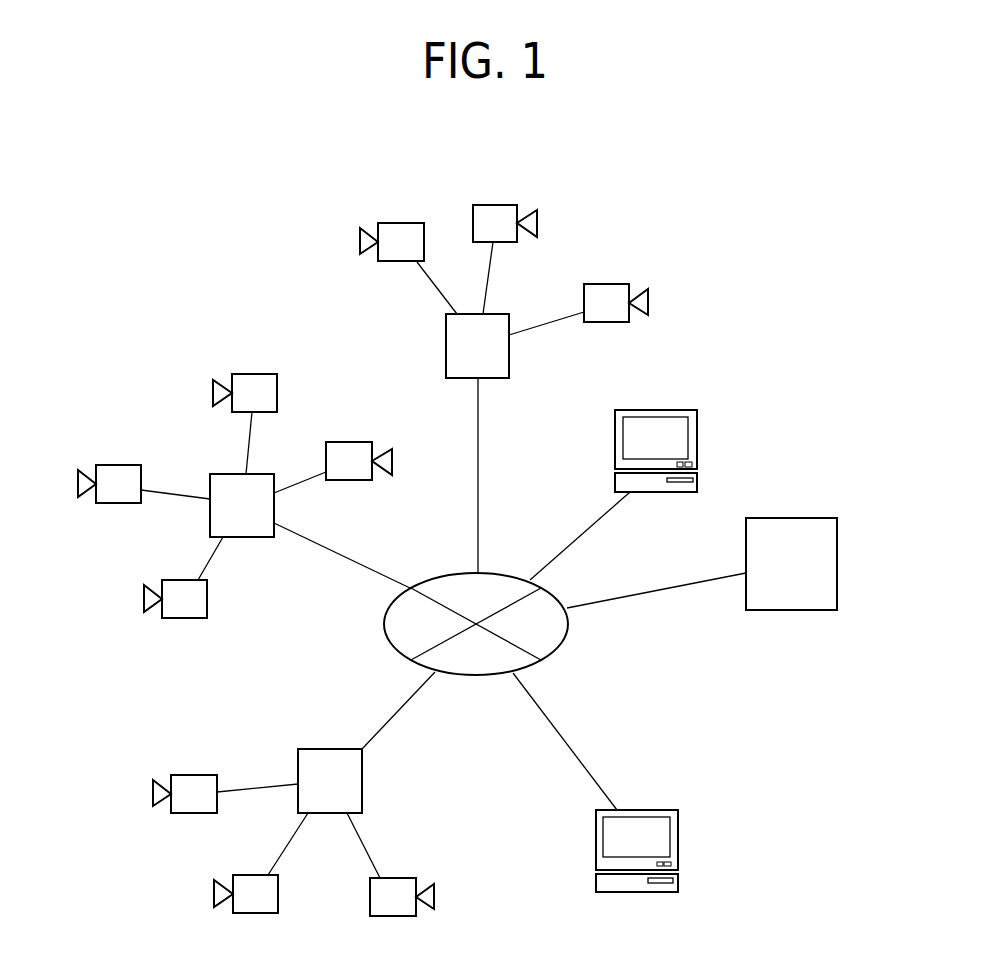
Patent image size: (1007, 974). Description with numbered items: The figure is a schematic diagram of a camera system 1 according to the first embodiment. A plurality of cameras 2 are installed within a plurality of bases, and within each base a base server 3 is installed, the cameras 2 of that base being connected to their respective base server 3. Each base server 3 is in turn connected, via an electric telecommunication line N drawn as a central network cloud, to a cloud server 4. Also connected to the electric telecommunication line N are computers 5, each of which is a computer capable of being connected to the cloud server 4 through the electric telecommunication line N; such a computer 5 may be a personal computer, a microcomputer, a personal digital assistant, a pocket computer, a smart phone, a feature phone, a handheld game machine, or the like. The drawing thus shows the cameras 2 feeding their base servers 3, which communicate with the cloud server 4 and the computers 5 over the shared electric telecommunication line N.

The camera system 1 is at (795, 320).
The camera 2 is at (500, 205).
The base server 3 is at (509, 357).
The cloud server 4 is at (837, 560).
The computer 5 is at (697, 485).
The electric telecommunication line N is at (562, 645).